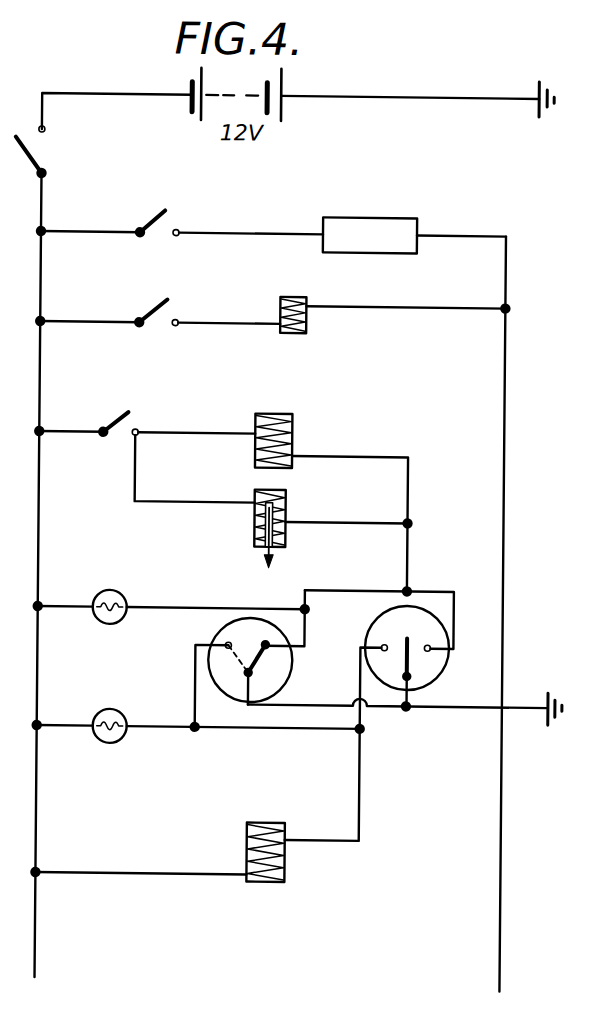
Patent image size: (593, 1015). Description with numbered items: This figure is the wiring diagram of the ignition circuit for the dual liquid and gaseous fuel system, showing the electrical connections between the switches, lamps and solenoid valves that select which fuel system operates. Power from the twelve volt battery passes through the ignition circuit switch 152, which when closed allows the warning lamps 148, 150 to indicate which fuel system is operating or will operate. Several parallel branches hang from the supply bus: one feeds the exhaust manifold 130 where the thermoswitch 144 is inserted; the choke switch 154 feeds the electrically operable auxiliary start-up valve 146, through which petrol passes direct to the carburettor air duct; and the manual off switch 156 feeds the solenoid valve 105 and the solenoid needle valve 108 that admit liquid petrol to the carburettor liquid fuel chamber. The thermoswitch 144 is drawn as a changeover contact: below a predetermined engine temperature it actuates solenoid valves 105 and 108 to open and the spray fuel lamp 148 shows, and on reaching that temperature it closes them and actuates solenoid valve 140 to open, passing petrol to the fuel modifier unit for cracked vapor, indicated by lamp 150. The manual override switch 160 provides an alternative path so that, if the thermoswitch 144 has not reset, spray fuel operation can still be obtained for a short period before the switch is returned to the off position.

The ignition circuit switch 152 is at (44, 152).
The exhaust manifold 130 is at (386, 247).
The choke switch 154 is at (175, 307).
The auxiliary start-up valve 146 is at (307, 295).
The manual off switch 156 is at (132, 420).
The solenoid valve 105 is at (294, 430).
The solenoid needle valve 108 is at (292, 513).
The spray fuel lamp 148 is at (133, 596).
The warning lamp 150 is at (122, 714).
The thermoswitch 144 is at (297, 667).
The manual override switch 160 is at (444, 675).
The solenoid valve 140 is at (290, 860).